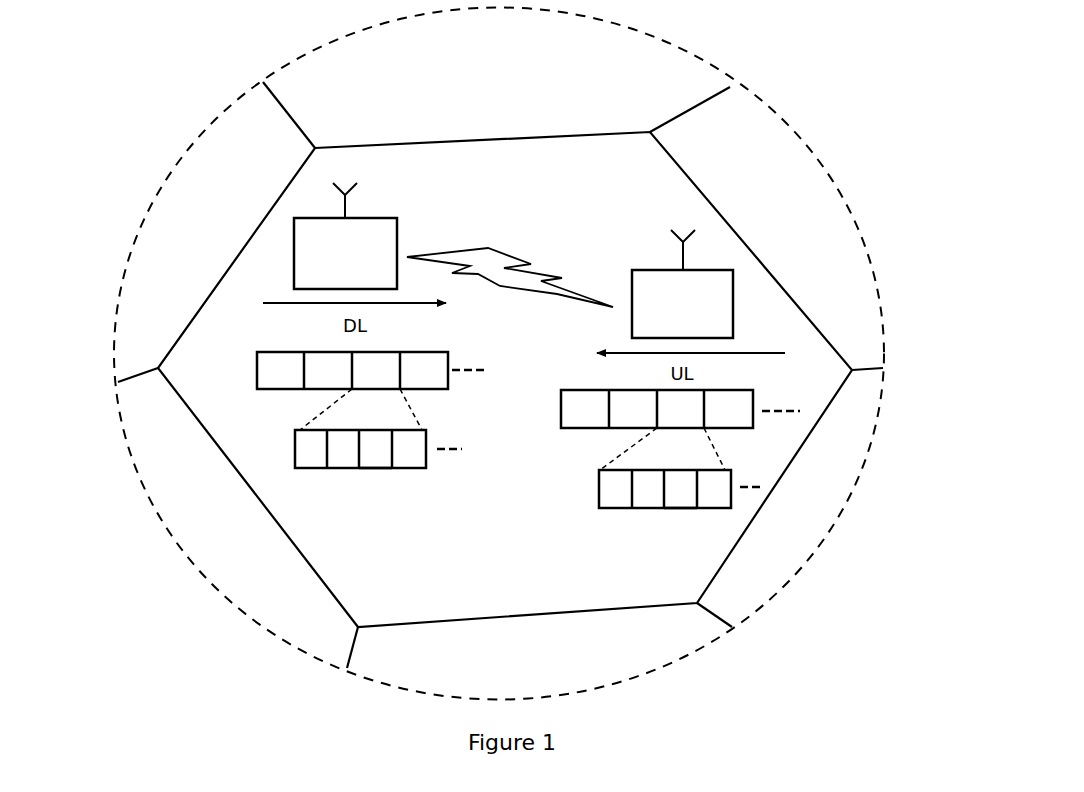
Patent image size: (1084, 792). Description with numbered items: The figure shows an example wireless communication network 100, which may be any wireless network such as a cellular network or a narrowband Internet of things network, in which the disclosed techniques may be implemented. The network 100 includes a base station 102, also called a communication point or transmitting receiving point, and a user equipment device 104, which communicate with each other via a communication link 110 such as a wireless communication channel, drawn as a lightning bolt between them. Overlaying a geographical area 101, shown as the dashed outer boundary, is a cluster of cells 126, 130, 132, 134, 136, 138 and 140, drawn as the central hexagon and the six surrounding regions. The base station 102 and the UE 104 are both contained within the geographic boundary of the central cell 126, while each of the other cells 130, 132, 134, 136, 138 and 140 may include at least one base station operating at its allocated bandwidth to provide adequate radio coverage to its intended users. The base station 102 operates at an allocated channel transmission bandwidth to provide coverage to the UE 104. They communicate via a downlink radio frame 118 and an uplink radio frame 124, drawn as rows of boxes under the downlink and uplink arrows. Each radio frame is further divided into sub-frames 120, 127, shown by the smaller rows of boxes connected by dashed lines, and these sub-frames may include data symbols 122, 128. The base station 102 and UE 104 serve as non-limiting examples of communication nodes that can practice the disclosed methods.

The wireless communication network 100 is at (902, 118).
The geographical area 101 is at (135, 237).
The base station 102 is at (329, 278).
The user equipment device 104 is at (667, 328).
The communication link 110 is at (500, 258).
The downlink radio frame 118 is at (262, 373).
The sub-frame 120 is at (295, 460).
The data symbol 122 is at (378, 468).
The uplink radio frame 124 is at (568, 412).
The cell 126 is at (507, 589).
The sub-frame 127 is at (600, 498).
The data symbol 128 is at (682, 507).
The cell 130 is at (181, 236).
The cell 132 is at (484, 94).
The cell 134 is at (772, 231).
The cell 136 is at (784, 528).
The cell 138 is at (521, 666).
The cell 140 is at (201, 536).